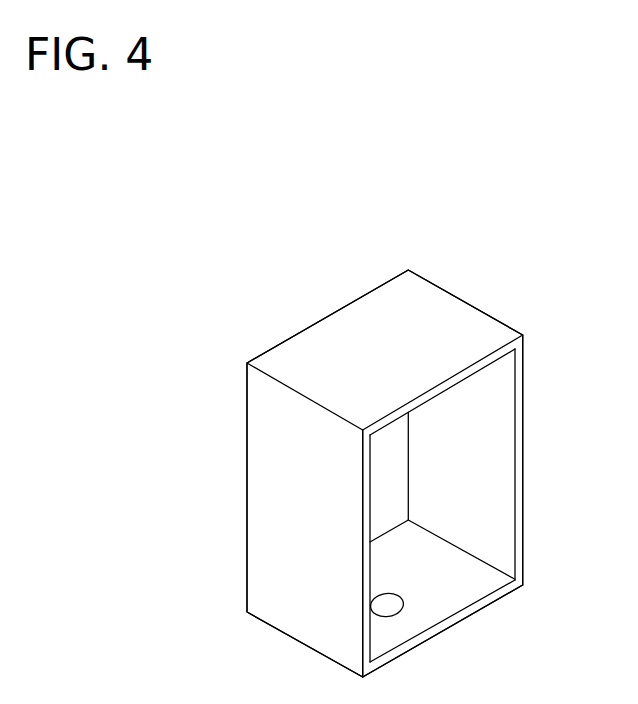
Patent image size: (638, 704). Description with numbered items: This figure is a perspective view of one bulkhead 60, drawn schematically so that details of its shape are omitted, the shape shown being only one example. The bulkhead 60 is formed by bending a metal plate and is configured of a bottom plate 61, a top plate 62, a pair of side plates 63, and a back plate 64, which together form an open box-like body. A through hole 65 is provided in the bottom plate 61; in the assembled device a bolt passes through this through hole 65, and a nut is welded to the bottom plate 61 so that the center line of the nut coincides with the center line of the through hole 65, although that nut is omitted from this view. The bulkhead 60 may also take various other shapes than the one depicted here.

The bulkhead 60 is at (196, 280).
The bottom plate 61 is at (498, 602).
The top plate 62 is at (472, 315).
The side plates 63 is at (255, 500).
The back plate 64 is at (395, 475).
The through hole 65 is at (372, 596).